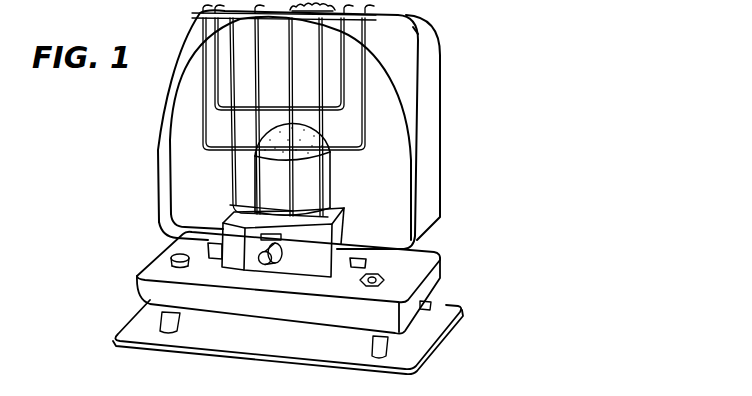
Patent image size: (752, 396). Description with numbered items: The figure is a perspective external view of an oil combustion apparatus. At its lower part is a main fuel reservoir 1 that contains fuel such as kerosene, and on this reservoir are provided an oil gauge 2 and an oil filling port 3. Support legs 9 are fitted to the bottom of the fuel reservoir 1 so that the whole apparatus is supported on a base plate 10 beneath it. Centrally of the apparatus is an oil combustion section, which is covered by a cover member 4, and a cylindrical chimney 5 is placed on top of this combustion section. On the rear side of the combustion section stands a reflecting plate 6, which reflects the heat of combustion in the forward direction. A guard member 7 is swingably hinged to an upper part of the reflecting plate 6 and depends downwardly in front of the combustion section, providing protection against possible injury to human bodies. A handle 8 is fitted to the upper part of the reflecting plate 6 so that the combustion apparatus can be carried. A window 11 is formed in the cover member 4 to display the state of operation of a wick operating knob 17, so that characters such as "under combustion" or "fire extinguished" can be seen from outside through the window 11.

The main fuel reservoir 1 is at (427, 250).
The oil gauge 2 is at (177, 255).
The oil filling port 3 is at (384, 280).
The cover member 4 is at (237, 227).
The cylindrical chimney 5 is at (313, 180).
The reflecting plate 6 is at (397, 135).
The guard member 7 is at (348, 93).
The handle 8 is at (300, 18).
The support legs 9 is at (160, 318).
The base plate 10 is at (227, 340).
The window 11 is at (283, 236).
The wick operating knob 17 is at (270, 263).